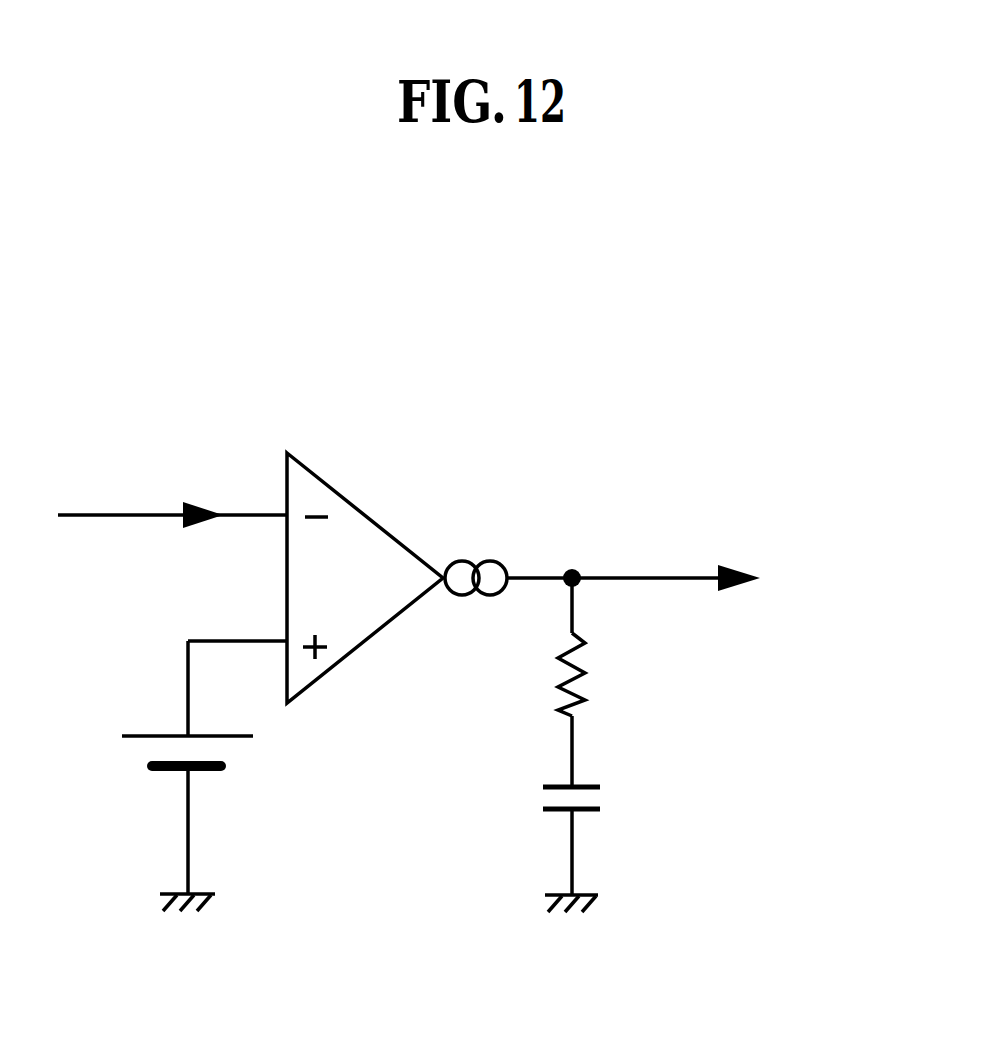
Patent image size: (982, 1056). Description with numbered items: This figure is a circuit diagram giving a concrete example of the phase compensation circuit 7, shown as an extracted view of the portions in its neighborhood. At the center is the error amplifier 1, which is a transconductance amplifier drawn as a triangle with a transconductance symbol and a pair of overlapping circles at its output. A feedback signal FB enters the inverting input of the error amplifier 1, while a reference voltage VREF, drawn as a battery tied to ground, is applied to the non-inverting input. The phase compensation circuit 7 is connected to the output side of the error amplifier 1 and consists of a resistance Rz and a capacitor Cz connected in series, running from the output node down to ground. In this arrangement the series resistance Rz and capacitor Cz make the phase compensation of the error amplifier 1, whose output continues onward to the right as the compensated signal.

The error amplifier 1 is at (365, 518).
The phase compensation circuit 7 is at (720, 745).
The resistance Rz is at (614, 682).
The capacitor Cz is at (606, 841).
The feedback input FB is at (172, 490).
The reference voltage source VREF is at (228, 776).